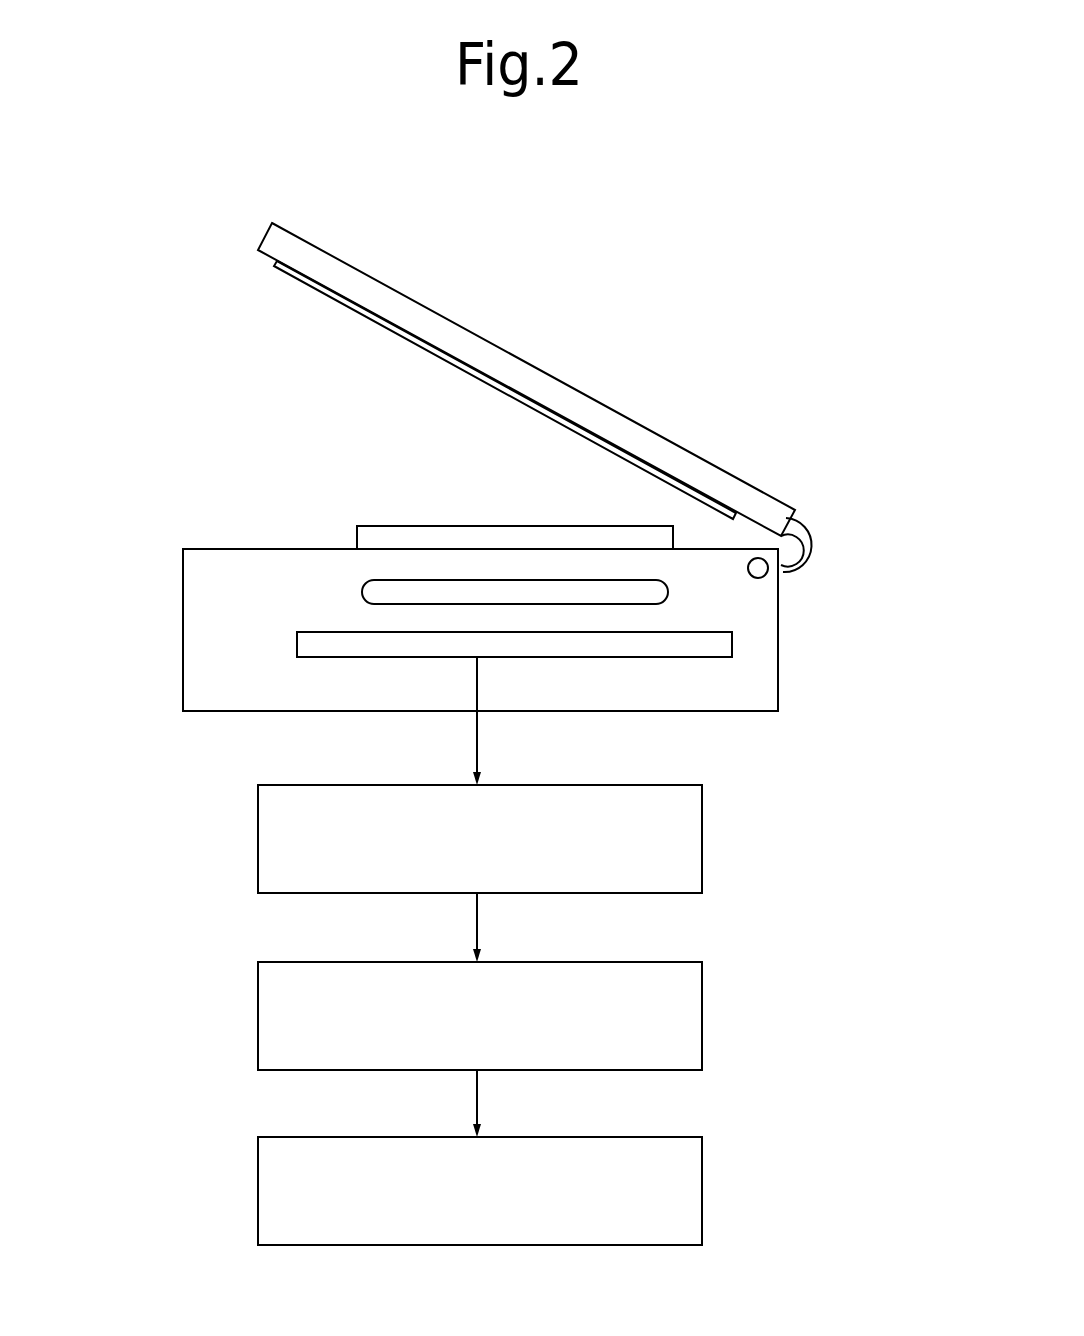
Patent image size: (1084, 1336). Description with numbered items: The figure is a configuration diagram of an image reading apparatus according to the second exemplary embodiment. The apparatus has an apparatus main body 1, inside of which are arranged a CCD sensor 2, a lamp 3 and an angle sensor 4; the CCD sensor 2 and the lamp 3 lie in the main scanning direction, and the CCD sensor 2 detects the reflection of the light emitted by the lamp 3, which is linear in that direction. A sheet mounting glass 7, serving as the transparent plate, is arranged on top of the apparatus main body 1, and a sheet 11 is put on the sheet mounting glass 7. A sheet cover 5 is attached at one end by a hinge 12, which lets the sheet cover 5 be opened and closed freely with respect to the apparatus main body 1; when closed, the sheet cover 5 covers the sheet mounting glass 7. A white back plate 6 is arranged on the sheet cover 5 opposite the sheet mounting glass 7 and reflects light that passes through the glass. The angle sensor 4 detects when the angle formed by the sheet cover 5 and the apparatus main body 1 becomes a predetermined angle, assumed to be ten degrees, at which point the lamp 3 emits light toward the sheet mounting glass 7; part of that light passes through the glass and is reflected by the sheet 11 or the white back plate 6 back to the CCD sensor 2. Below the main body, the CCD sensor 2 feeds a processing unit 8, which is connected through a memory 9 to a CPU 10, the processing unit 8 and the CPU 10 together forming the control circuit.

The apparatus main body 1 is at (499, 476).
The CCD sensor 2 is at (712, 648).
The lamp 3 is at (658, 588).
The angle sensor 4 is at (760, 567).
The sheet cover 5 is at (367, 274).
The white back plate 6 is at (310, 290).
The sheet mounting glass 7 is at (226, 542).
The processing unit 8 is at (702, 823).
The memory 9 is at (703, 1000).
The CPU 10 is at (703, 1174).
The sheet 11 is at (400, 525).
The hinge 12 is at (812, 532).